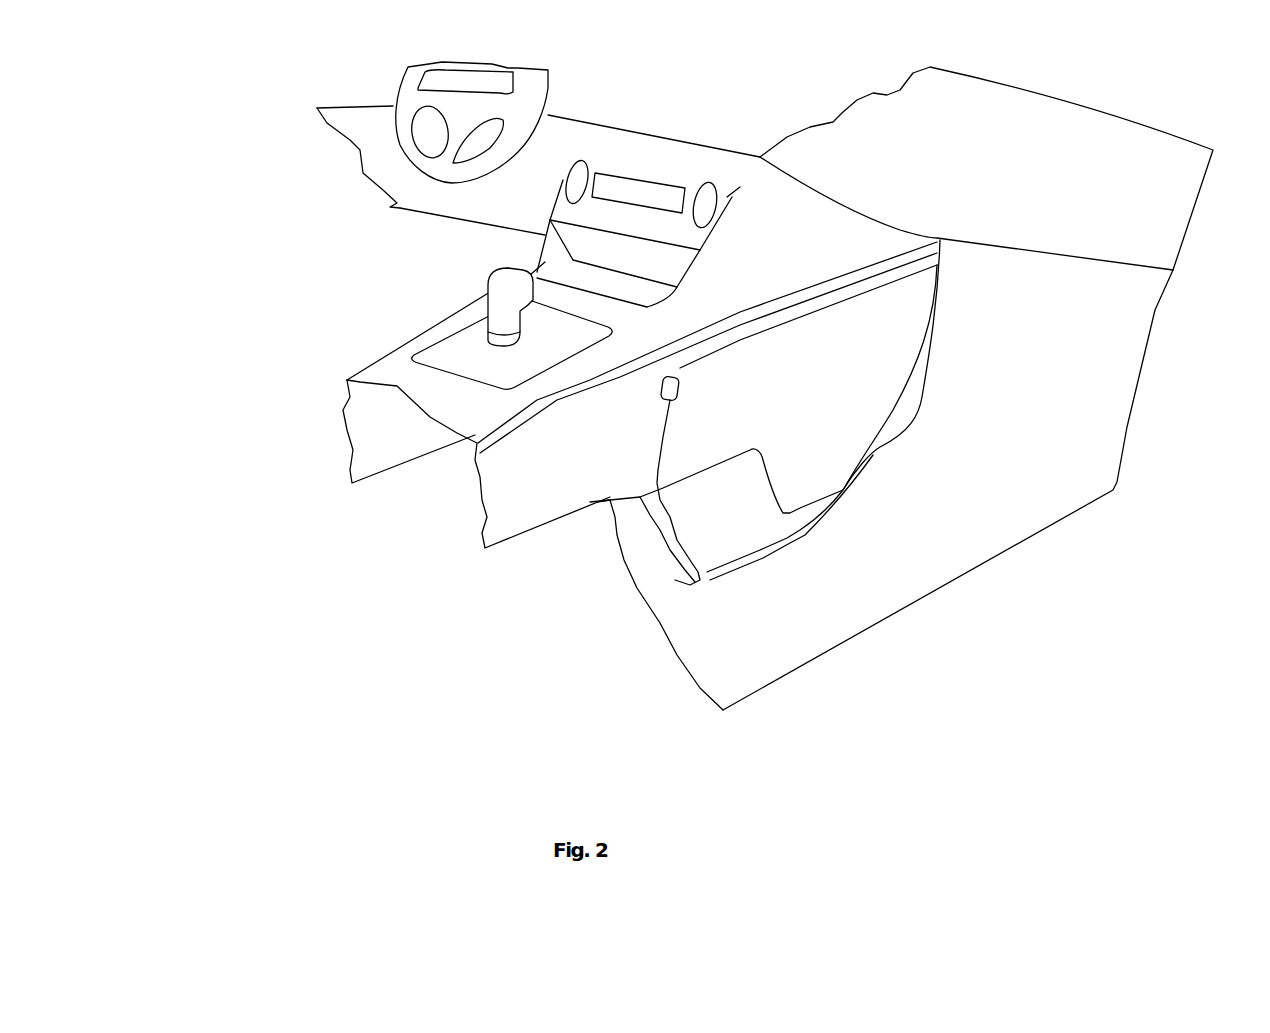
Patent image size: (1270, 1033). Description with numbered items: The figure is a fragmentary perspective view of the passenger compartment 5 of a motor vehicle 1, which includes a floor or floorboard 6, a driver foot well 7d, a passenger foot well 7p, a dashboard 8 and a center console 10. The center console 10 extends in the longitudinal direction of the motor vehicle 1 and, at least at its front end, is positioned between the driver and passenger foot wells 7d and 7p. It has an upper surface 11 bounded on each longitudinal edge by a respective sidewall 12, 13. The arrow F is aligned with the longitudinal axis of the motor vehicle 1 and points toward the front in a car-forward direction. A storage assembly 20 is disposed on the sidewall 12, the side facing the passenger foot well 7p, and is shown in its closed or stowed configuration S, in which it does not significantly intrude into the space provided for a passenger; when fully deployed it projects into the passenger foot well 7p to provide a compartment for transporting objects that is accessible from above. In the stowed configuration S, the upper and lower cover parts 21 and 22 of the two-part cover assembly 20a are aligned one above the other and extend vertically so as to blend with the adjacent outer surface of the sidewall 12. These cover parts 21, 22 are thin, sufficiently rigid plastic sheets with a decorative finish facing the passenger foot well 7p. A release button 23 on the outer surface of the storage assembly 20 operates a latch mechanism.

The motor vehicle 1 is at (790, 691).
The passenger compartment 5 is at (248, 628).
The floor or floorboard 6 is at (807, 615).
The driver foot well 7d is at (422, 246).
The passenger foot well 7p is at (1033, 318).
The dashboard 8 is at (1107, 188).
The center console 10 is at (434, 307).
The upper surface 11 is at (399, 365).
The sidewall 12 is at (532, 485).
The sidewall 13 is at (377, 437).
The storage assembly 20 is at (629, 595).
The stowed configuration S is at (690, 449).
The two-part cover assembly 20a is at (820, 413).
The upper cover part 21 is at (713, 463).
The lower cover part 22 is at (710, 567).
The release button 23 is at (665, 400).
The arrow F is at (467, 360).